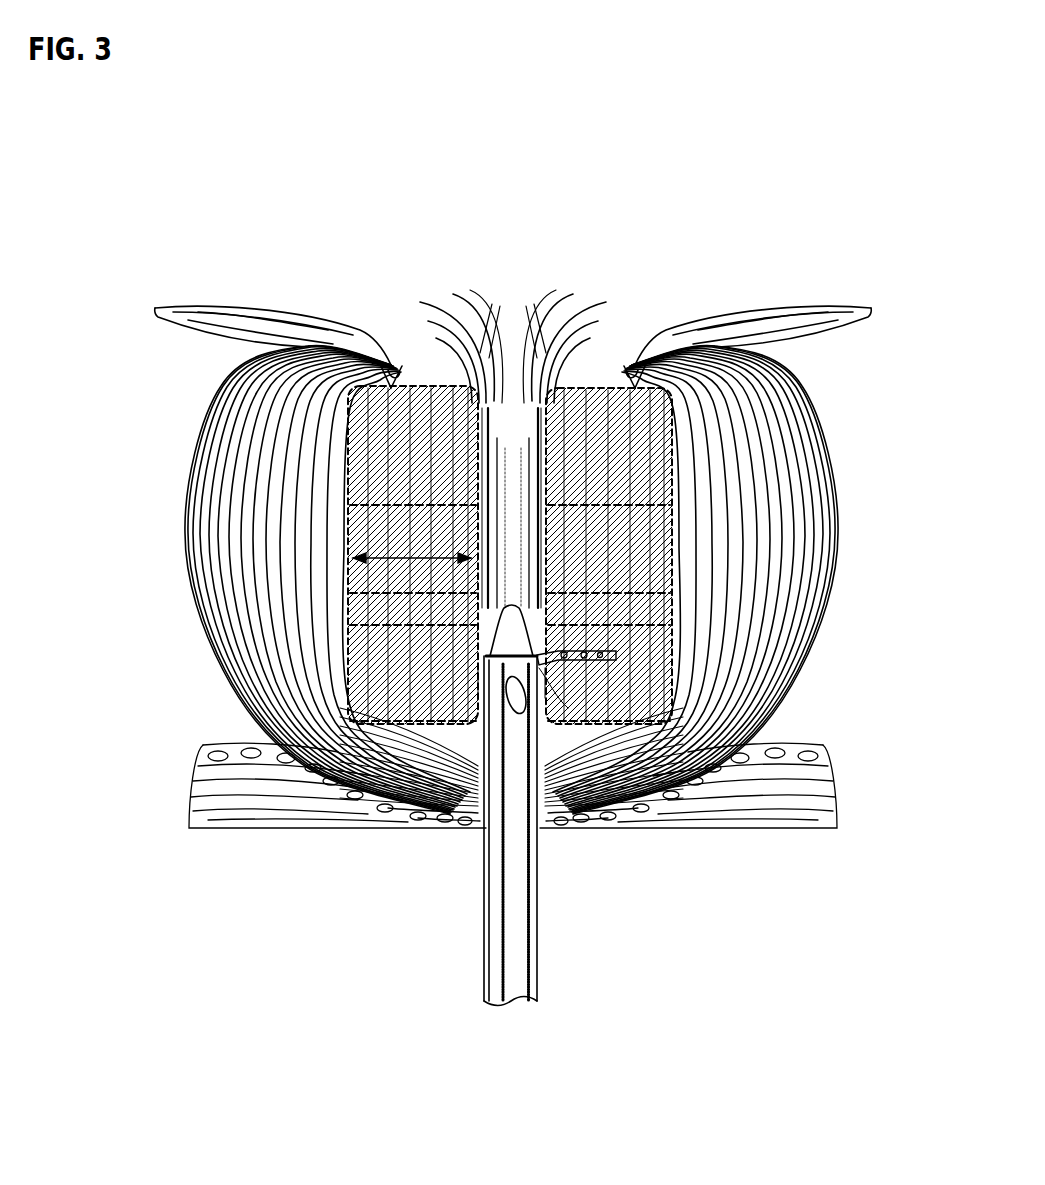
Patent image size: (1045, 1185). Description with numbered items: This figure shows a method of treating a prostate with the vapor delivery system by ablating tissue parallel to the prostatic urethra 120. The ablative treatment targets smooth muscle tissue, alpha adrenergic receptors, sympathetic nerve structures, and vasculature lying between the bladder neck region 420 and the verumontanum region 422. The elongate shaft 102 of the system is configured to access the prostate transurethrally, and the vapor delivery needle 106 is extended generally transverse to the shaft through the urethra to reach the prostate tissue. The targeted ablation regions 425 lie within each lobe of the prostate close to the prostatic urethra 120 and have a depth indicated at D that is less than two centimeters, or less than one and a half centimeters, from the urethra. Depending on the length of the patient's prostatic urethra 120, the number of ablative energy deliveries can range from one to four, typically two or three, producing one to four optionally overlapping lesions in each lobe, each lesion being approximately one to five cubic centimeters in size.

The elongate shaft 102 is at (512, 853).
The vapor delivery needle 106 is at (563, 652).
The prostatic urethra 120 is at (497, 548).
The bladder neck region 420 is at (545, 405).
The verumontanum region 422 is at (472, 700).
The targeted ablation regions 425 is at (648, 543).
The depth D is at (412, 552).